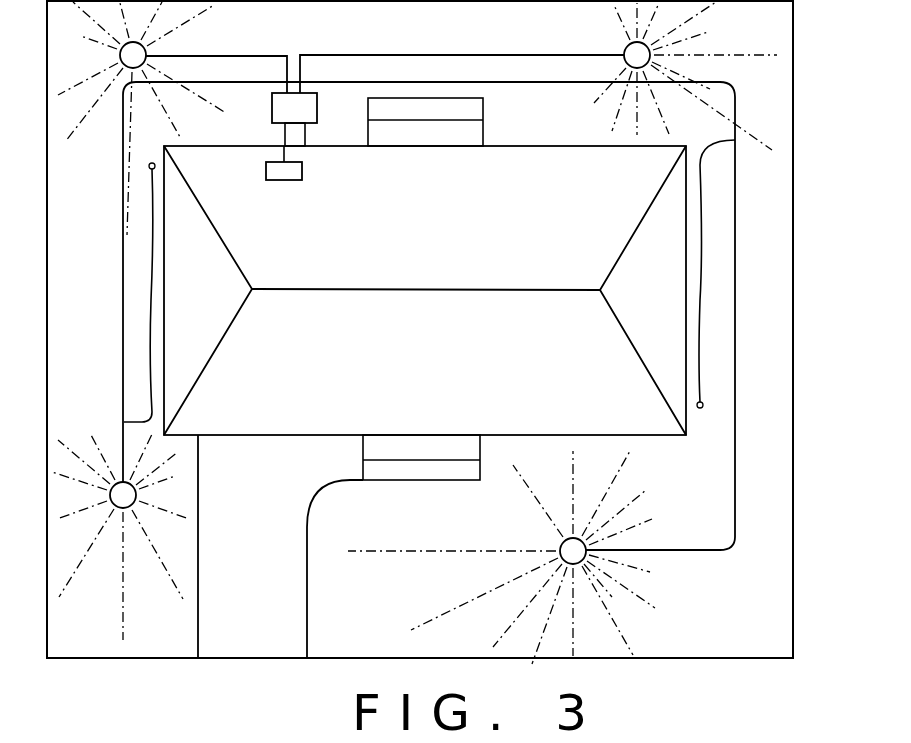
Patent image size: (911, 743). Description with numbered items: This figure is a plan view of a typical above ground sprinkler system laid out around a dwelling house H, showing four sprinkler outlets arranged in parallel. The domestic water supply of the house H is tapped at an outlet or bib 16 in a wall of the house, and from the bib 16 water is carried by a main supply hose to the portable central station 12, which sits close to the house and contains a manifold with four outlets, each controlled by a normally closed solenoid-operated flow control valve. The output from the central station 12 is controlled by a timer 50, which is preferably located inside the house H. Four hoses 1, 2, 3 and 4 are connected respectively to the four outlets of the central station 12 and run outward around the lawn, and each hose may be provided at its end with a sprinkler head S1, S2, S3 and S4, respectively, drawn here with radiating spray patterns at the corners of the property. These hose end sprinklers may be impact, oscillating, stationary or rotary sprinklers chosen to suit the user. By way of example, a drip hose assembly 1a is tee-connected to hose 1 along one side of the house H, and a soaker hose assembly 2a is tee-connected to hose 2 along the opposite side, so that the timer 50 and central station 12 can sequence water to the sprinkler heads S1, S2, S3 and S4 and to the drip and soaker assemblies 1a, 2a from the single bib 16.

The hose 1 is at (240, 83).
The drip hose assembly 1a is at (152, 300).
The hose 2 is at (517, 83).
The soaker hose assembly 2a is at (708, 292).
The hose 3 is at (231, 56).
The hose 4 is at (416, 54).
The portable central station 12 is at (322, 103).
The outlet or bib 16 is at (306, 133).
The timer 50 is at (293, 182).
The house H is at (434, 272).
The sprinkler head S1 is at (110, 495).
The sprinkler head S2 is at (561, 547).
The sprinkler head S3 is at (120, 56).
The sprinkler head S4 is at (657, 45).